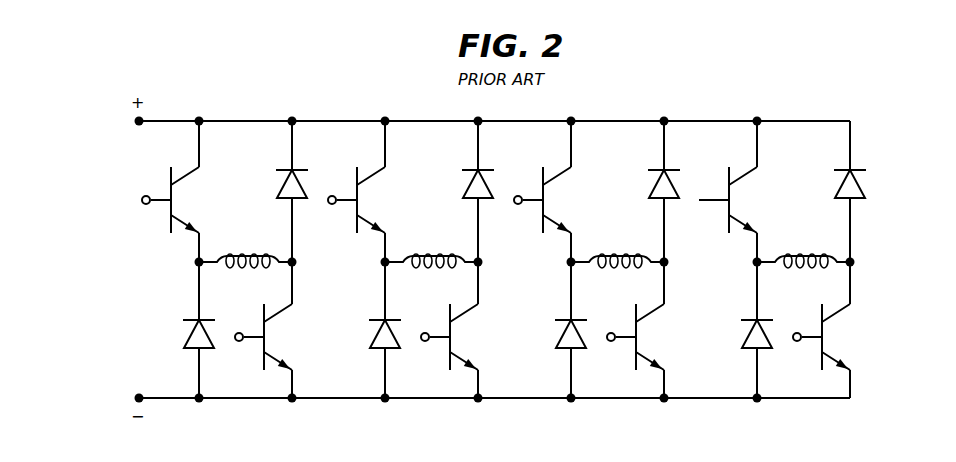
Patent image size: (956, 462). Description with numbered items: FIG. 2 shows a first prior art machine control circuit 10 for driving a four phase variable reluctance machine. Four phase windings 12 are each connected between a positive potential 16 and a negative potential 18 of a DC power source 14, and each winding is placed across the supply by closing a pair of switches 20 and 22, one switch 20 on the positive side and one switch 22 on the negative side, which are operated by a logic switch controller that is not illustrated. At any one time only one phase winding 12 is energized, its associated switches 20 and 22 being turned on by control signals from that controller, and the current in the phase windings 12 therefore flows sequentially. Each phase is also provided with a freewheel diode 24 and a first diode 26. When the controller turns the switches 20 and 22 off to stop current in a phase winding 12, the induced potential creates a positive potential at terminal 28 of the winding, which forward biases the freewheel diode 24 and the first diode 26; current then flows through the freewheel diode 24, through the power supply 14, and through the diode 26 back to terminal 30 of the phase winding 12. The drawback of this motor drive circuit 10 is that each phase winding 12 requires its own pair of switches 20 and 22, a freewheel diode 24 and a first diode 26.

The machine control circuit 10 is at (370, 97).
The phase winding 12 is at (250, 250).
The DC power source 14 is at (124, 218).
The positive potential 16 is at (144, 118).
The negative potential 18 is at (141, 393).
The switch 20 is at (172, 182).
The switch 22 is at (258, 355).
The freewheel diode 24 is at (297, 186).
The first diode 26 is at (190, 340).
The terminal 28 is at (293, 262).
The terminal 30 is at (197, 262).